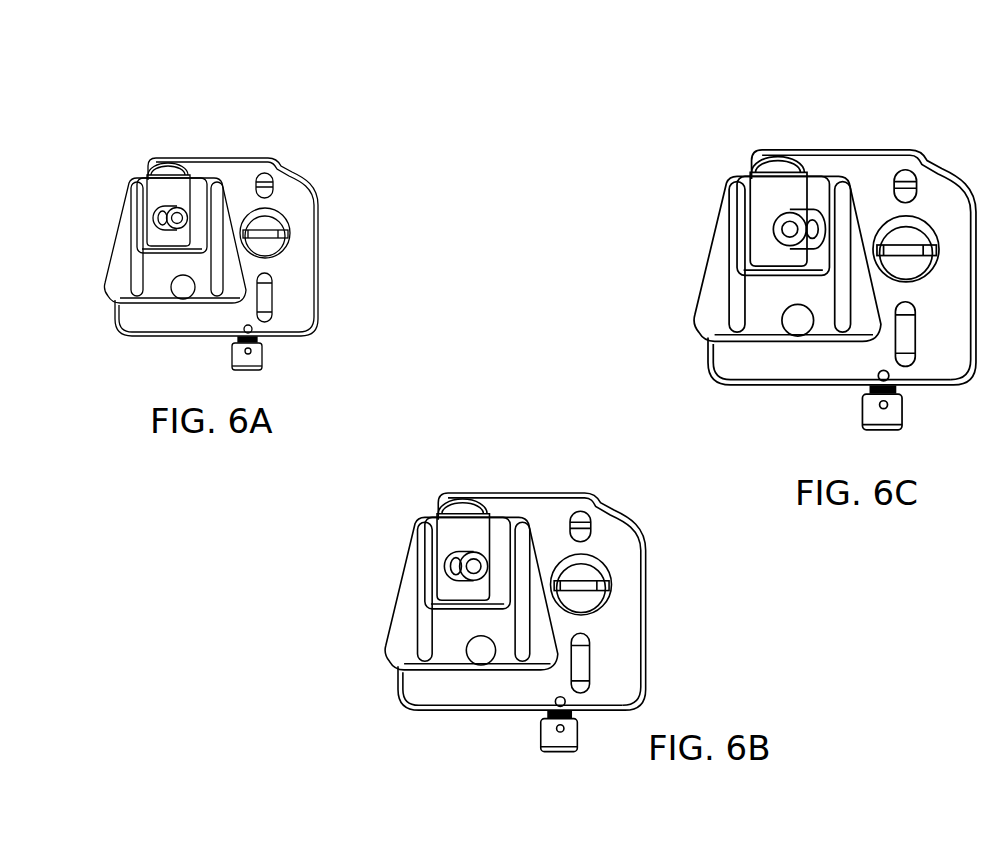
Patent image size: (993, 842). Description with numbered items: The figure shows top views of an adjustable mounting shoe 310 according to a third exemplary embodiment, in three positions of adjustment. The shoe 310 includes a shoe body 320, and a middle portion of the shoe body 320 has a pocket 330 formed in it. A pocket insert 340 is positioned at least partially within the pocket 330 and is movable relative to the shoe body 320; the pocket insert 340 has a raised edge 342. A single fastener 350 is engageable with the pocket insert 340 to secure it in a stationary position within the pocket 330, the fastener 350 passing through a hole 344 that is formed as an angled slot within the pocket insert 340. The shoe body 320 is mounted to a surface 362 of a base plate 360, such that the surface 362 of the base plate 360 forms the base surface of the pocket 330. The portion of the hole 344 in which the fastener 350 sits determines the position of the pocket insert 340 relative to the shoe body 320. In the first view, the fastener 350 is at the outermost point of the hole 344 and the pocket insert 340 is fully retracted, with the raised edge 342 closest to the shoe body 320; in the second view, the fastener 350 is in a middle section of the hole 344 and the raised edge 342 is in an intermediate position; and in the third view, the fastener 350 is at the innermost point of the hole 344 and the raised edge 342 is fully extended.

In FIG. 6A, the adjustable mounting shoe 310 is at (102, 107).
In FIG. 6B, the adjustable mounting shoe 310 is at (420, 460).
In FIG. 6C, the adjustable mounting shoe 310 is at (748, 102).
In FIG. 6A, the shoe body 320 is at (120, 282).
In FIG. 6B, the shoe body 320 is at (402, 640).
In FIG. 6C, the shoe body 320 is at (713, 315).
In FIG. 6A, the pocket 330 is at (200, 186).
In FIG. 6B, the pocket 330 is at (503, 537).
In FIG. 6C, the pocket 330 is at (763, 193).
In FIG. 6A, the pocket insert 340 is at (149, 200).
In FIG. 6B, the pocket insert 340 is at (457, 540).
In FIG. 6C, the pocket insert 340 is at (783, 194).
In FIG. 6A, the raised edge 342 is at (168, 170).
In FIG. 6B, the raised edge 342 is at (472, 505).
In FIG. 6C, the raised edge 342 is at (798, 158).
In FIG. 6A, the hole 344 is at (158, 220).
In FIG. 6B, the hole 344 is at (490, 562).
In FIG. 6C, the hole 344 is at (815, 222).
In FIG. 6A, the fastener 350 is at (178, 212).
In FIG. 6B, the fastener 350 is at (468, 562).
In FIG. 6C, the fastener 350 is at (787, 228).
In FIG. 6A, the base plate 360 is at (157, 325).
In FIG. 6B, the base plate 360 is at (460, 690).
In FIG. 6C, the base plate 360 is at (768, 372).
In FIG. 6A, the surface 362 is at (181, 330).
In FIG. 6B, the surface 362 is at (488, 694).
In FIG. 6C, the surface 362 is at (805, 372).